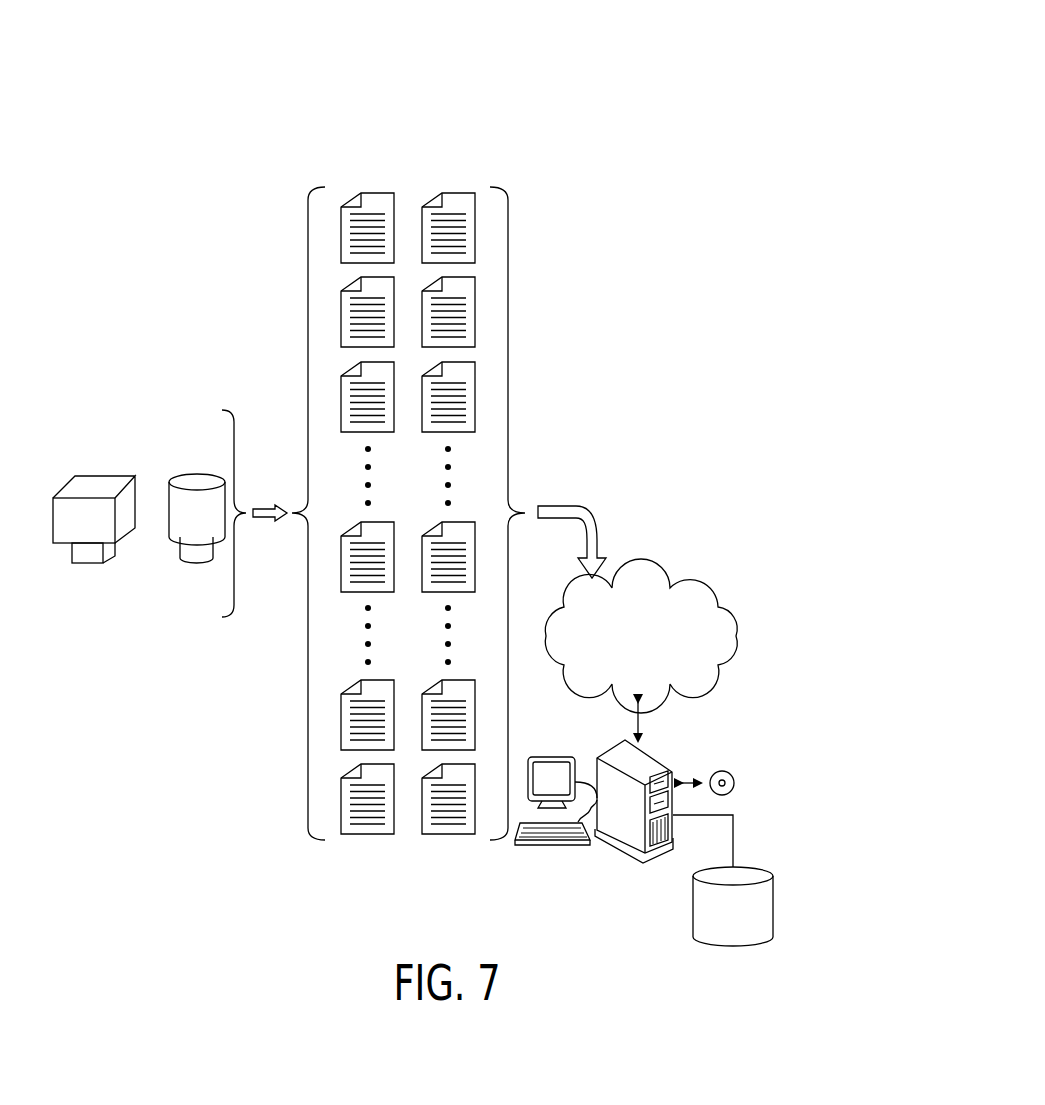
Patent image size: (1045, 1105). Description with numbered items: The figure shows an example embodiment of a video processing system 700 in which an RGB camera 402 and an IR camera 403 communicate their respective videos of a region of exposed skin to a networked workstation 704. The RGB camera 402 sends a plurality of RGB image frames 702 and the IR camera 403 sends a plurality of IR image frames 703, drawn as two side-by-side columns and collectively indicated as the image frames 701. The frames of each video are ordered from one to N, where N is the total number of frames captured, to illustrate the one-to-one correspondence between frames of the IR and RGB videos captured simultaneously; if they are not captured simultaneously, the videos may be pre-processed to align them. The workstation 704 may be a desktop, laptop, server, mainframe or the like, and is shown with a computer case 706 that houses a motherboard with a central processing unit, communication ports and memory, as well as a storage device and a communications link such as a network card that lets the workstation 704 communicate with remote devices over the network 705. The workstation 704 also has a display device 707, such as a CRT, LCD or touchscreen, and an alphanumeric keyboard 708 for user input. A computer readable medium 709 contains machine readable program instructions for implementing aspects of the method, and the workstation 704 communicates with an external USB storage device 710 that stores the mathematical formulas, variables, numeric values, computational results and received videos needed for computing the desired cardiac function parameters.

The video processing system 700 is at (713, 63).
The RGB camera 402 is at (93, 477).
The IR camera 403 is at (198, 477).
The plurality of image frames 701 is at (508, 237).
The RGB image frames 702 is at (354, 138).
The IR image frames 703 is at (470, 138).
The networked workstation 704 is at (738, 747).
The network 705 is at (742, 636).
The computer case 706 is at (648, 758).
The display device 707 is at (551, 757).
The alphanumeric keyboard 708 is at (556, 845).
The computer readable medium 709 is at (735, 784).
The external USB storage device 710 is at (693, 911).